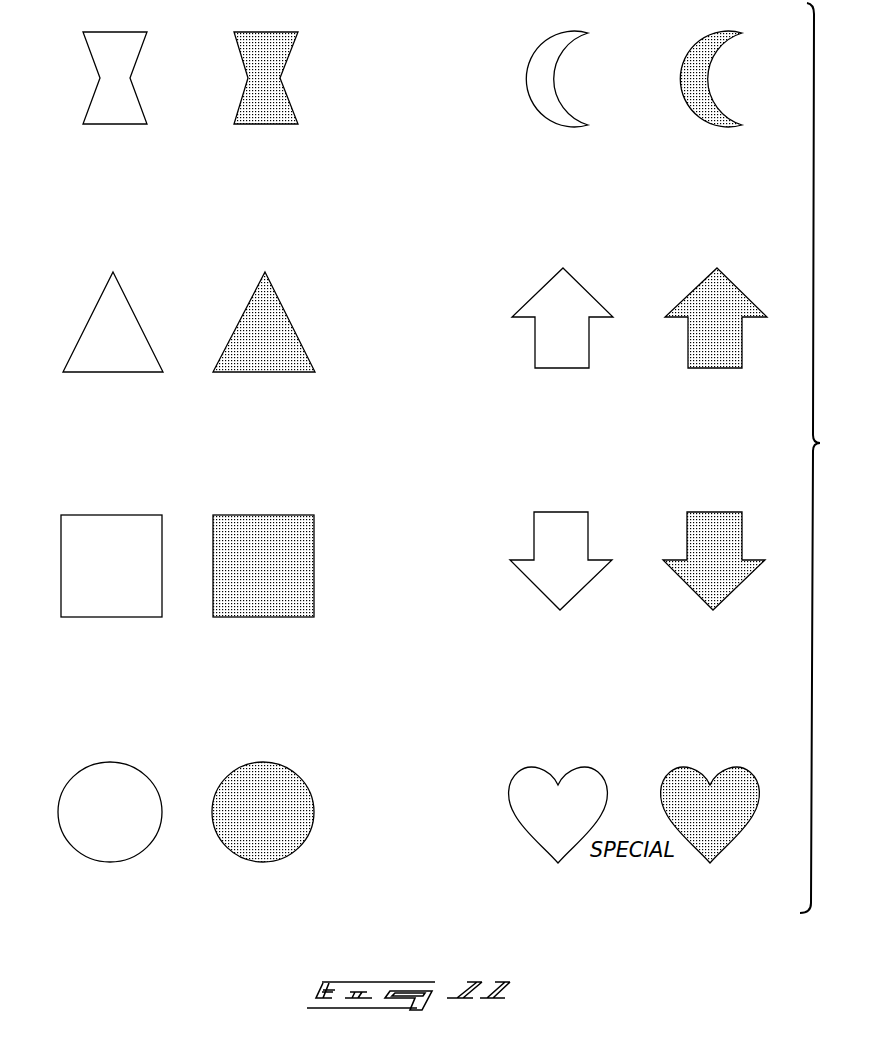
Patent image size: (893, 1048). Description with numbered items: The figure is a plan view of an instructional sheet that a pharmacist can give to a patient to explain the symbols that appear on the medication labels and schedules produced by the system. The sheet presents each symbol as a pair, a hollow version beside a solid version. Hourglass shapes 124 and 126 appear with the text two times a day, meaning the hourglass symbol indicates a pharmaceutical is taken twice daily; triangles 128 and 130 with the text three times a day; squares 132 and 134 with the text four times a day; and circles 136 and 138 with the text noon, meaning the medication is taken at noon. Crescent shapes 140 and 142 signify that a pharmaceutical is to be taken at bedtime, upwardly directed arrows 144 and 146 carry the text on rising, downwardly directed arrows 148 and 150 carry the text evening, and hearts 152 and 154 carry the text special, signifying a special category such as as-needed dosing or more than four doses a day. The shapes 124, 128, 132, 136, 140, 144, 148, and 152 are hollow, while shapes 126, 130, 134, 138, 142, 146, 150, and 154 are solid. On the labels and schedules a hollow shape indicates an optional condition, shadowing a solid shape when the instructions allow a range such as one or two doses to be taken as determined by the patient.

The hourglass shape 124 is at (110, 124).
The hourglass shape 126 is at (280, 125).
The triangle 128 is at (108, 373).
The triangle 130 is at (277, 373).
The square 132 is at (105, 617).
The square 134 is at (277, 617).
The circle 136 is at (108, 862).
The circle 138 is at (260, 862).
The crescent shape 140 is at (578, 125).
The crescent shape 142 is at (730, 125).
The upwardly directed arrow 144 is at (575, 368).
The upwardly directed arrow 146 is at (727, 368).
The downwardly directed arrow 148 is at (561, 611).
The downwardly directed arrow 150 is at (713, 612).
The heart 152 is at (558, 864).
The heart 154 is at (710, 864).